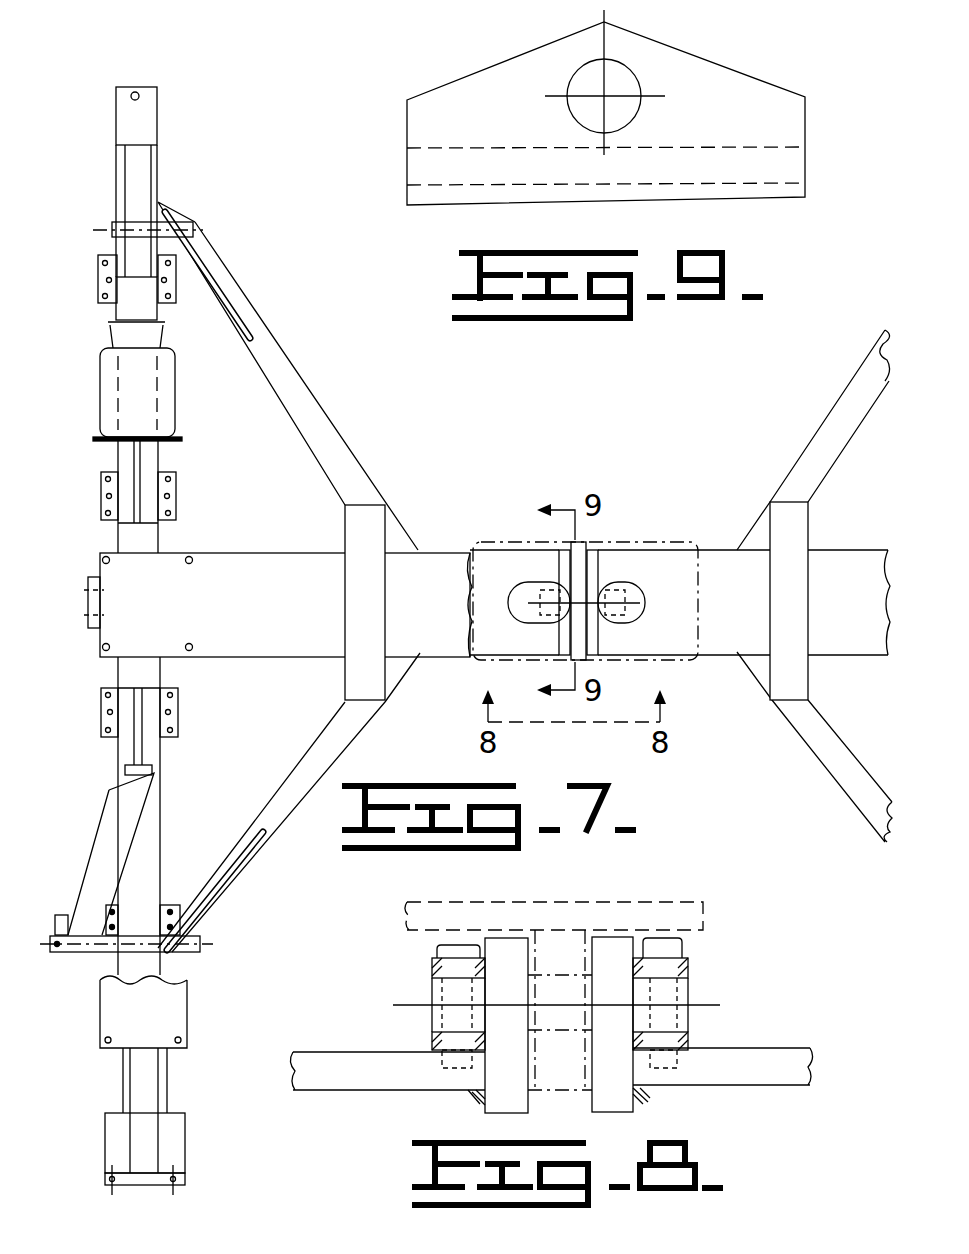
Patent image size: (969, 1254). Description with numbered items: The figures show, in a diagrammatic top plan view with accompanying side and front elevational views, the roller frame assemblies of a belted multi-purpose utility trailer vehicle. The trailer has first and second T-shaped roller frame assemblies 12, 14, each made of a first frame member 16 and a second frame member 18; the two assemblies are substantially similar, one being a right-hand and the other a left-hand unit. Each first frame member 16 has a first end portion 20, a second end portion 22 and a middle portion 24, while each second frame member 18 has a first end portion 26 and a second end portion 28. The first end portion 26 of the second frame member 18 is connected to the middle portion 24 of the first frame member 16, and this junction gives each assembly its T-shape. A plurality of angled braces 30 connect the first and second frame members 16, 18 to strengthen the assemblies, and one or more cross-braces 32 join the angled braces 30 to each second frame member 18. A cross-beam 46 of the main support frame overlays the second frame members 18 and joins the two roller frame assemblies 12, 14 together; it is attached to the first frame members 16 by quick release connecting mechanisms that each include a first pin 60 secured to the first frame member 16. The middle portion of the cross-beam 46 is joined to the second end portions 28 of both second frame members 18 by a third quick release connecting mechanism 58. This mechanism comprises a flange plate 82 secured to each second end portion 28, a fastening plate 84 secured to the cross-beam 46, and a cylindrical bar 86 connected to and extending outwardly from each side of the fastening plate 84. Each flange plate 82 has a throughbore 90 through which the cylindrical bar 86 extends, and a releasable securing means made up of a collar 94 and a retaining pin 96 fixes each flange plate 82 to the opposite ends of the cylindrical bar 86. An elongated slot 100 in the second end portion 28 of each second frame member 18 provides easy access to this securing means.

In FIG. 7, the first T-shaped roller frame assembly 12 is at (903, 847).
In FIG. 7, the second T-shaped roller frame assembly 14 is at (113, 744).
In FIG. 7, the first frame member 16 is at (110, 342).
In FIG. 9, the second frame member 18 is at (800, 165).
In FIG. 7, the second frame member 18 is at (247, 612).
In FIG. 8, the second frame member 18 is at (340, 1078).
In FIG. 7, the first end portion of first frame member 20 is at (158, 126).
In FIG. 7, the second end portion of first frame member 22 is at (118, 1180).
In FIG. 7, the middle portion of first frame member 24 is at (160, 540).
In FIG. 7, the first end portion of second frame member 26 is at (126, 634).
In FIG. 7, the second end portion of second frame member 28 is at (553, 566).
In FIG. 8, the second end portion of second frame member 28 is at (473, 1077).
In FIG. 7, the angled brace 30 is at (292, 380).
In FIG. 7, the cross-brace 32 is at (367, 512).
In FIG. 7, the cross-beam 46 is at (655, 662).
In FIG. 8, the cross-beam 46 is at (668, 915).
In FIG. 7, the third quick release connecting mechanism 58 is at (553, 632).
In FIG. 8, the third quick release connecting mechanism 58 is at (416, 956).
In FIG. 7, the first pin 60 is at (77, 950).
In FIG. 9, the flange plate 82 is at (697, 114).
In FIG. 7, the flange plate 82 is at (607, 568).
In FIG. 8, the flange plate 82 is at (597, 990).
In FIG. 8, the fastening plate 84 is at (613, 923).
In FIG. 8, the cylindrical bar 86 is at (432, 990).
In FIG. 9, the throughbore 90 is at (576, 72).
In FIG. 8, the collar 94 is at (435, 1040).
In FIG. 8, the retaining pin 96 is at (460, 945).
In FIG. 7, the elongated slot 100 is at (520, 605).